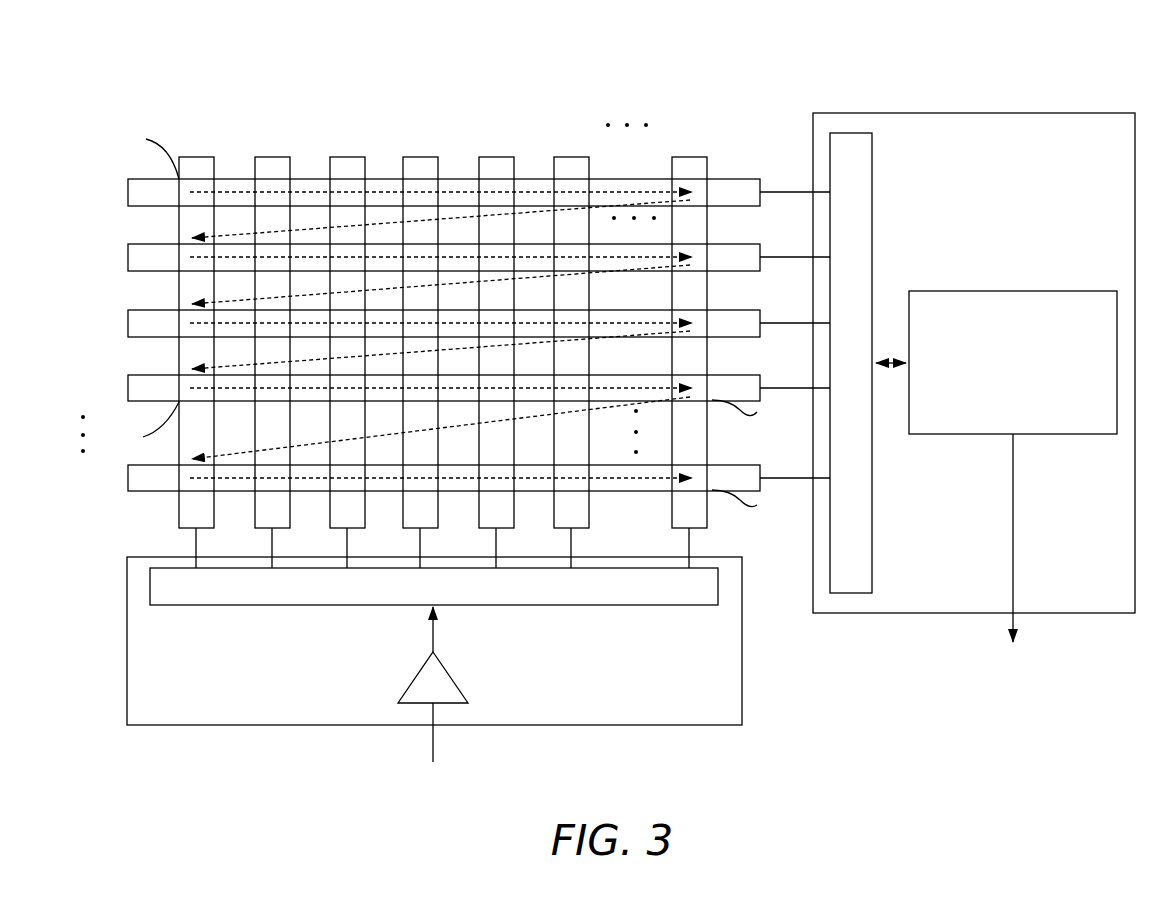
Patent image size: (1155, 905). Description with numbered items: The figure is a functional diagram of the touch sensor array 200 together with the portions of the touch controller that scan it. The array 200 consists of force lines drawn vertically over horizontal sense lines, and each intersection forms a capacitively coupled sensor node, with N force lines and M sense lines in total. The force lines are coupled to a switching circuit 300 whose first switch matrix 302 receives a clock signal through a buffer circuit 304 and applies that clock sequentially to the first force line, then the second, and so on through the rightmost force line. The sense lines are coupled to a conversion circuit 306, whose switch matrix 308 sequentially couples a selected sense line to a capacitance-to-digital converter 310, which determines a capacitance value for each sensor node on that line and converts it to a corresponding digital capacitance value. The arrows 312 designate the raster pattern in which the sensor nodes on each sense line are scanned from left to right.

The touch sensor array 200 is at (140, 68).
The switching circuit 300 is at (434, 659).
The first switch matrix 302 is at (434, 586).
The buffer circuit 304 is at (452, 678).
The conversion circuit 306 is at (974, 377).
The switch matrix 308 is at (873, 243).
The capacitance-to-digital converter 310 is at (1080, 434).
The arrows 312 is at (280, 232).